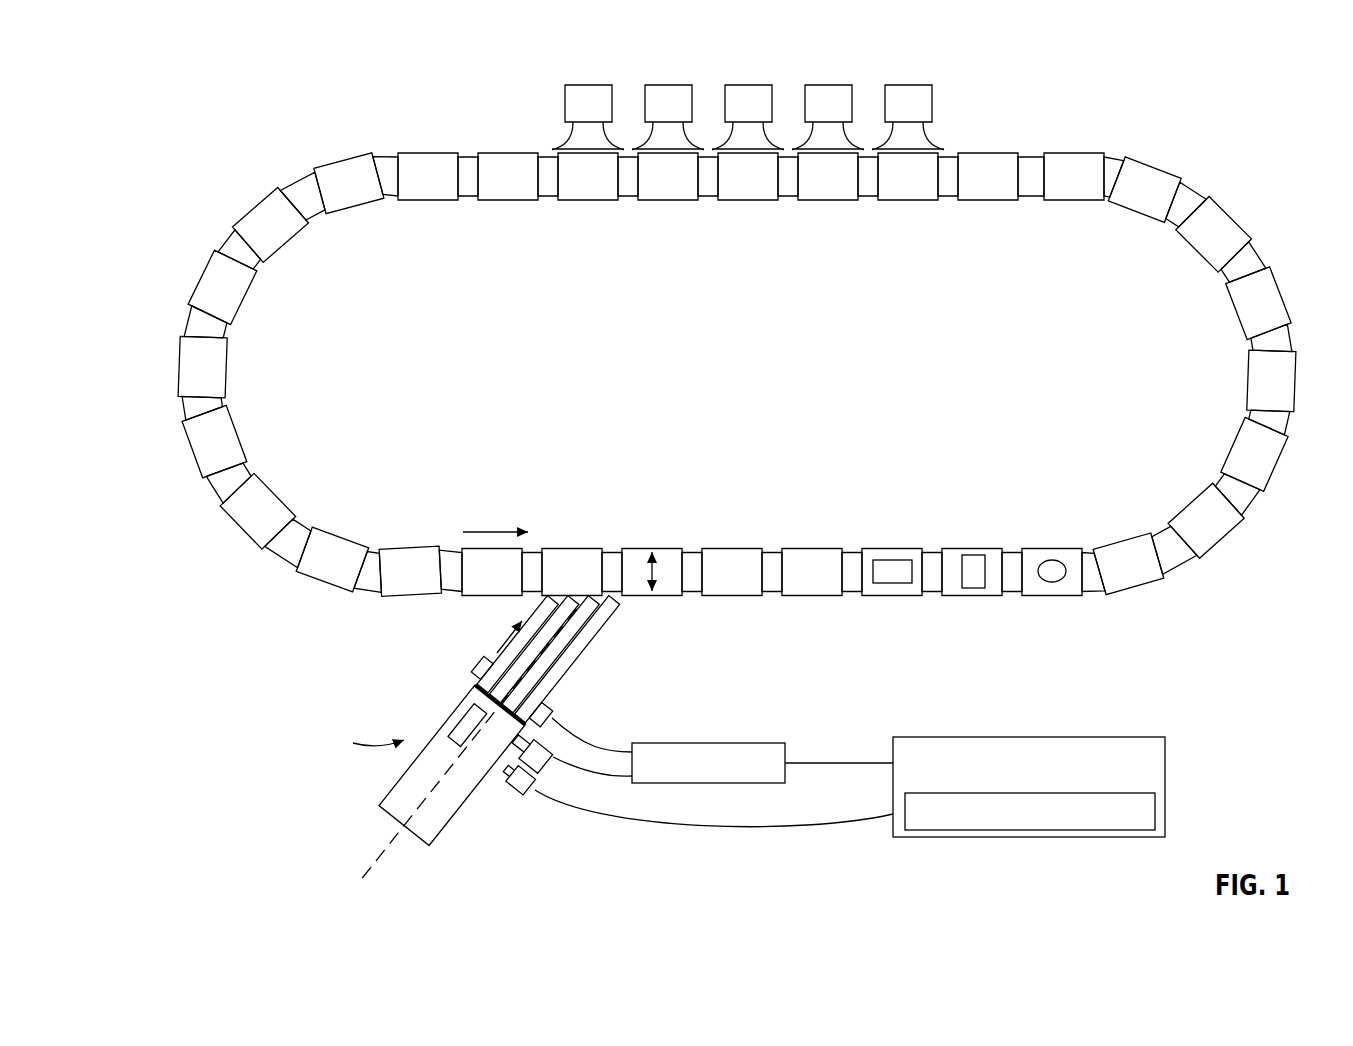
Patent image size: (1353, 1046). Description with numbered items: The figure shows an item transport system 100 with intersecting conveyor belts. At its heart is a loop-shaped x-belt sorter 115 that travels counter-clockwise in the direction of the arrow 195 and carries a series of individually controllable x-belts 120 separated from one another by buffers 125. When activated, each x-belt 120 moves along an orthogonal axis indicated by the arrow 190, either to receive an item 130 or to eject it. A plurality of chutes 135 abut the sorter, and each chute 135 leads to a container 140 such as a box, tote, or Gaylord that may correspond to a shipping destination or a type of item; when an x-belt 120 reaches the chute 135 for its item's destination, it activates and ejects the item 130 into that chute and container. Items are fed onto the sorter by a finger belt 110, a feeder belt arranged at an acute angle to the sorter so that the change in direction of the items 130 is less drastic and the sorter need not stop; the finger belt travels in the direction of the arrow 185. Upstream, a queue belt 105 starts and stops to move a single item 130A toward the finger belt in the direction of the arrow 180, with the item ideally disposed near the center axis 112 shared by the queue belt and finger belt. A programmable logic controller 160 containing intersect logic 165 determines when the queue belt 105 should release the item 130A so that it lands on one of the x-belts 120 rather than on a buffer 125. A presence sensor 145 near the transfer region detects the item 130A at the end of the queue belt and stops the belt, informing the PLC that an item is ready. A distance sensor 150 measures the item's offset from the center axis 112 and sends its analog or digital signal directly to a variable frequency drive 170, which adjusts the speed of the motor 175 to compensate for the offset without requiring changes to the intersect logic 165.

The item transport system 100 is at (355, 76).
The queue belt 105 is at (431, 846).
The finger belt 110 is at (604, 621).
The center axis 112 is at (388, 842).
The x-belt sorter 115 is at (737, 375).
The x-belts 120 is at (645, 545).
The buffers 125 is at (1013, 548).
The items 130 is at (886, 583).
The item 130A is at (462, 708).
The chutes 135 is at (848, 134).
The containers 140 is at (748, 85).
The presence sensor 145 is at (515, 796).
The distance sensor 150 is at (552, 772).
The programmable logic controller (PLC) 160 is at (1062, 770).
The intersect logic 165 is at (1150, 792).
The variable frequency drive (VFD) 170 is at (718, 743).
The motor 175 is at (548, 710).
The arrow 180 is at (357, 741).
The arrow 185 is at (505, 641).
The arrow 190 is at (660, 574).
The arrow 195 is at (495, 532).